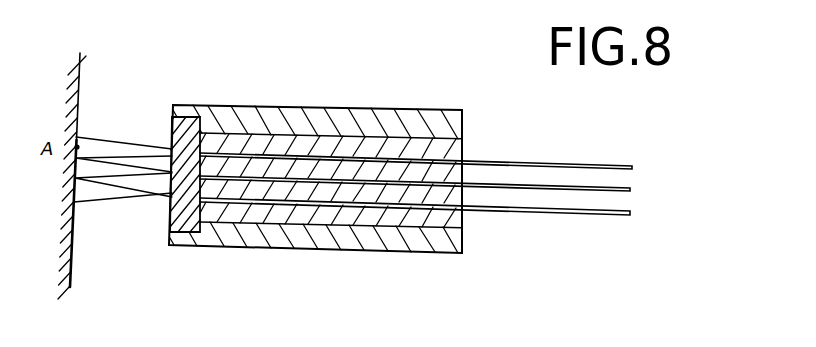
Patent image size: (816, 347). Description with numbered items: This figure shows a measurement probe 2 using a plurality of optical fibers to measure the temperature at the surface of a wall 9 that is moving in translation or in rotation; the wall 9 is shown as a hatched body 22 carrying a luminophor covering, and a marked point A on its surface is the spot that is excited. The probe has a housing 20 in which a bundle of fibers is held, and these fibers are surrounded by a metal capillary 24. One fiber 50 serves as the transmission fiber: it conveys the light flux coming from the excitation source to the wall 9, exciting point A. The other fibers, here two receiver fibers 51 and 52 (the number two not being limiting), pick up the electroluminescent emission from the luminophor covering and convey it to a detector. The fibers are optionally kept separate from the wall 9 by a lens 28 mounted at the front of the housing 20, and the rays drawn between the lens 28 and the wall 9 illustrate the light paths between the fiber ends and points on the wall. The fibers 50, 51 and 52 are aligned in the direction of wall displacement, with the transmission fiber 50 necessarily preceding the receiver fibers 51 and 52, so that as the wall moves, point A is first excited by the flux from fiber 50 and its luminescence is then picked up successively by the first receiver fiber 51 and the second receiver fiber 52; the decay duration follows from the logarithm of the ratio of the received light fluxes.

The sensor head assembly 2 is at (242, 262).
The wall 9 is at (82, 70).
The housing 20 is at (291, 128).
The target object 22 is at (73, 239).
The metal capillary 24 is at (417, 215).
The lens 28 is at (178, 140).
The fiber 50 is at (573, 163).
The fiber 51 is at (623, 192).
The fiber 52 is at (563, 207).